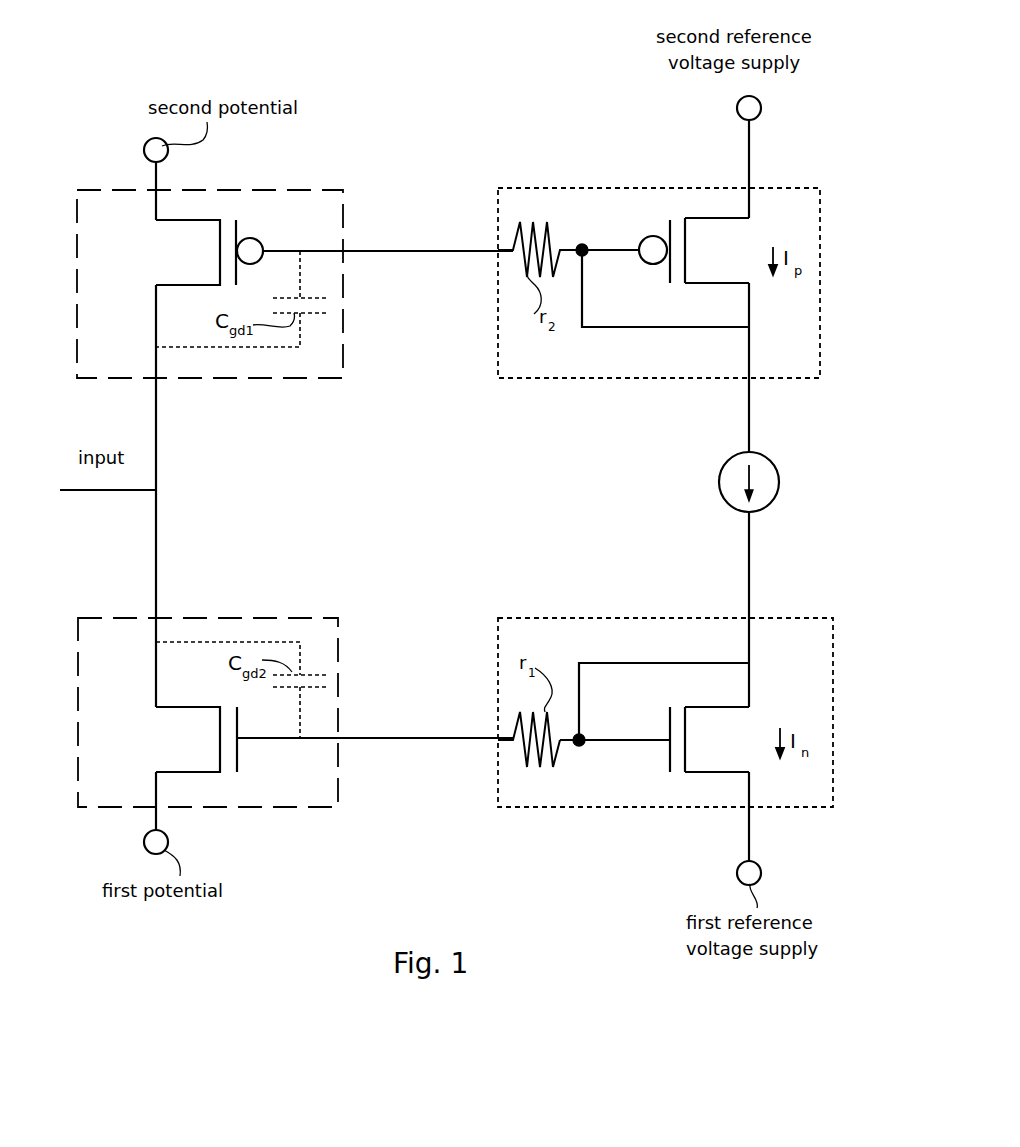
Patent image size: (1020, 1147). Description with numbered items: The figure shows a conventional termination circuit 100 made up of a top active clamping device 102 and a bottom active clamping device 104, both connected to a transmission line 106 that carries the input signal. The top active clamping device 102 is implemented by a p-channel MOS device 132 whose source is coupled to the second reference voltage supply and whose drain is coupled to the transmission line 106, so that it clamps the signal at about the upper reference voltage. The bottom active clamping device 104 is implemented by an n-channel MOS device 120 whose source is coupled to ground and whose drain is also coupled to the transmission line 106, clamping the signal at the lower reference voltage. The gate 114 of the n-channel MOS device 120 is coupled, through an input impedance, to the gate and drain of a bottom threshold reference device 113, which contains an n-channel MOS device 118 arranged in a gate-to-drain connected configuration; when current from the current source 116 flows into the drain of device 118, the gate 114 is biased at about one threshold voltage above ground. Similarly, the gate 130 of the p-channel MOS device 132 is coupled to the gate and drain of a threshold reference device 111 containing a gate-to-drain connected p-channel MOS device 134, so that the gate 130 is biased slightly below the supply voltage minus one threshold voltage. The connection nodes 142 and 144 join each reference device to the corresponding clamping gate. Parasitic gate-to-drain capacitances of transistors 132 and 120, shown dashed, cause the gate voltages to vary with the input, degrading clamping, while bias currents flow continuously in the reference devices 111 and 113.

The termination circuit 100 is at (133, 918).
The top active clamping device 102 is at (113, 192).
The bottom active clamping device 104 is at (78, 621).
The transmission line 106 is at (97, 491).
The threshold reference device 111 is at (808, 203).
The bottom threshold reference device 113 is at (815, 630).
The gate 114 is at (238, 750).
The current source 116 is at (721, 474).
The n-channel MOS device 118 is at (690, 733).
The n-channel MOS device 120 is at (220, 740).
The gate 130 is at (237, 220).
The p-channel MOS device 132 is at (220, 244).
The p-channel MOS device 134 is at (690, 243).
The node 142 is at (582, 245).
The node 144 is at (579, 746).